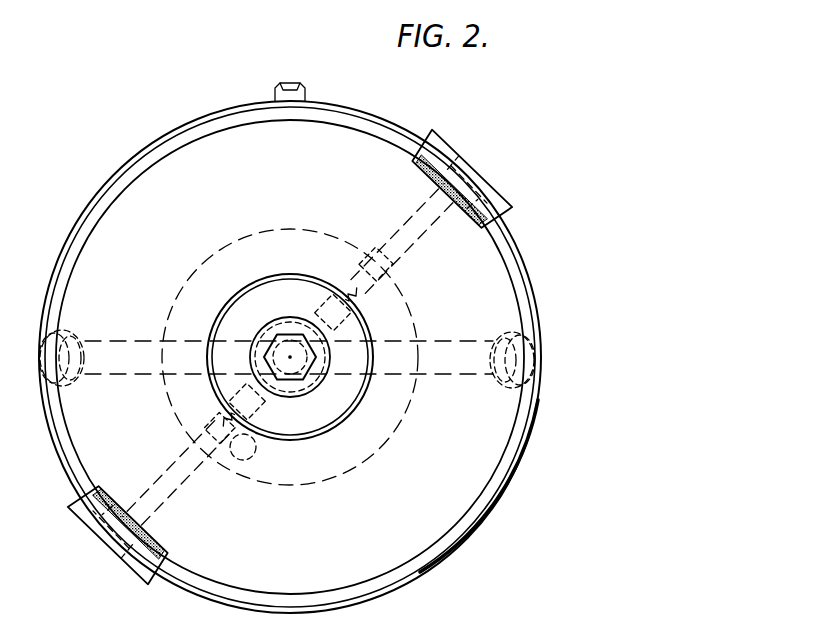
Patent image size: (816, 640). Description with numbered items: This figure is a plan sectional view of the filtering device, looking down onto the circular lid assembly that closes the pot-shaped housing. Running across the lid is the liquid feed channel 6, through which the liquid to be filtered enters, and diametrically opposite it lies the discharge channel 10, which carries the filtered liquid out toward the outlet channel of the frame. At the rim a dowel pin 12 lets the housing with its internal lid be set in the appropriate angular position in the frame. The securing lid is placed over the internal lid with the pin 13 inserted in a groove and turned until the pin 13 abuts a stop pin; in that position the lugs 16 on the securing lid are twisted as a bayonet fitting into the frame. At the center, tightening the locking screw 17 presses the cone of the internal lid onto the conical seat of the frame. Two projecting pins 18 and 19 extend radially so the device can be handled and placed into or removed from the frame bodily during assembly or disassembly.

The liquid feed channel 6 is at (103, 341).
The discharge channel 10 is at (485, 340).
The dowel pin 12 is at (305, 98).
The pin 13 is at (258, 450).
The lugs 16 is at (510, 214).
The locking screw 17 is at (318, 367).
The projecting pin 18 is at (167, 390).
The projecting pin 19 is at (340, 290).